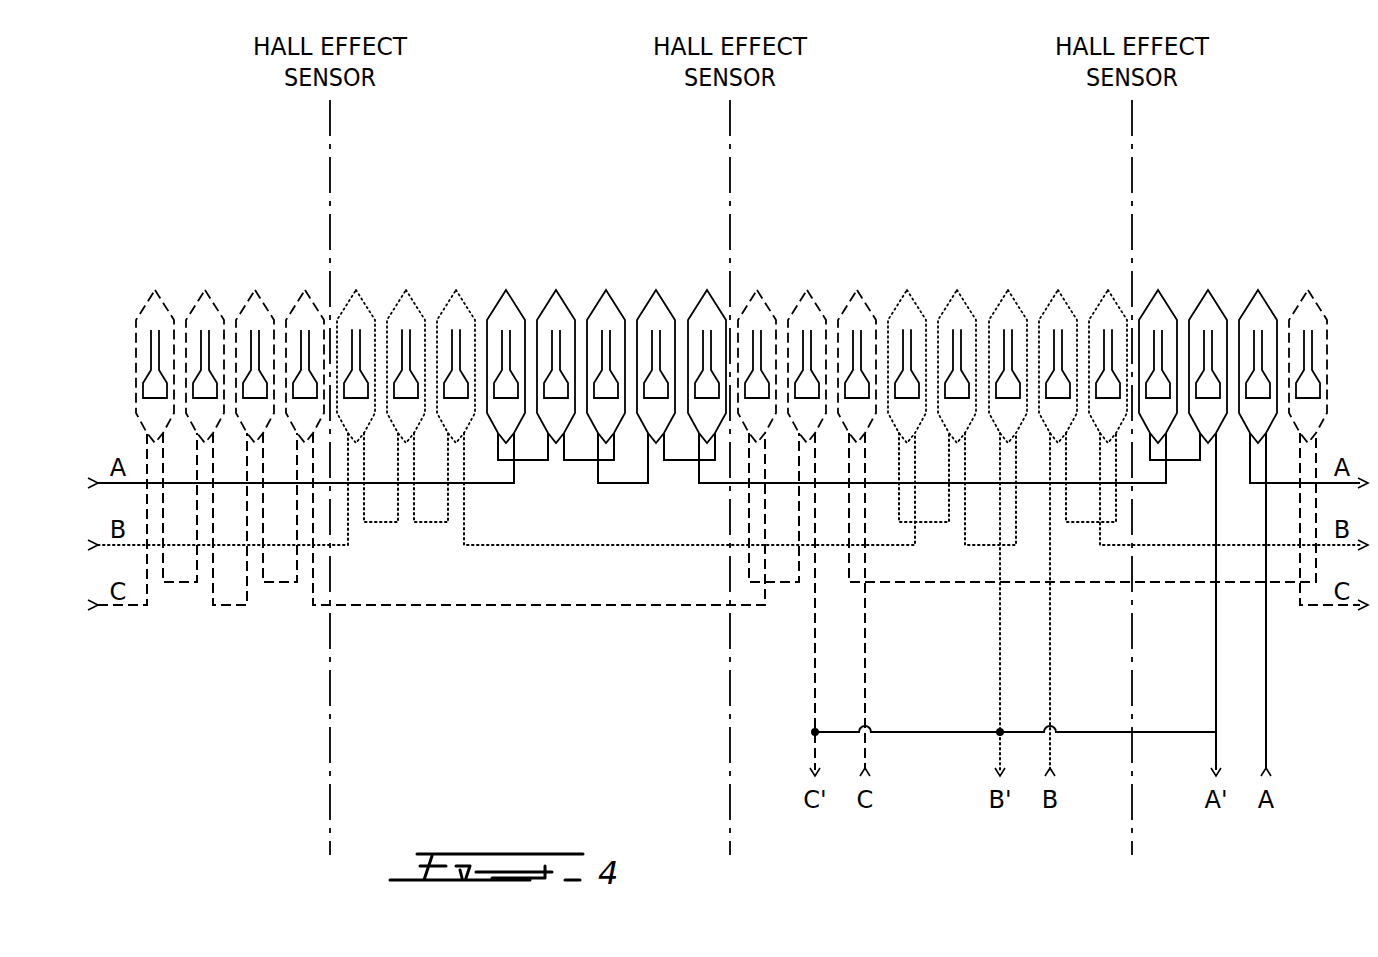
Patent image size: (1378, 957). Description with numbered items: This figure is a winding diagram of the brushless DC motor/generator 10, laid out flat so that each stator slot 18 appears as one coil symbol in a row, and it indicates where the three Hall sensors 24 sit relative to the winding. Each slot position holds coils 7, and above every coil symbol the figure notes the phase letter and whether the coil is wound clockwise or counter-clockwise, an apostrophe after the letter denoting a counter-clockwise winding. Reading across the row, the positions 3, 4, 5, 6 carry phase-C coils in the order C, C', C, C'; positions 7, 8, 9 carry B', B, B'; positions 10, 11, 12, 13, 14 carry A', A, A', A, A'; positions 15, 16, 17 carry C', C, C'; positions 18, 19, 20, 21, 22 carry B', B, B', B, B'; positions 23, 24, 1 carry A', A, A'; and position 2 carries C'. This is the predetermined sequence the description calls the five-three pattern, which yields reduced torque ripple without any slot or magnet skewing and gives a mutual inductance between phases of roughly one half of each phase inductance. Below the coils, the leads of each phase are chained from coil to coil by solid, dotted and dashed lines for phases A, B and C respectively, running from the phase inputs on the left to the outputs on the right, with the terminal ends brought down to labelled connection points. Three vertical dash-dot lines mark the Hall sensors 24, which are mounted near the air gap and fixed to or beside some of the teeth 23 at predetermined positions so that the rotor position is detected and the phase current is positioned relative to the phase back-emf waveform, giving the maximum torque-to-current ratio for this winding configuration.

The stator coil slot 1 is at (1258, 315).
The stator coil slot 2 is at (1308, 315).
The stator coil slot 3 is at (155, 323).
The stator coil slot 4 is at (205, 315).
The stator coil slot 5 is at (255, 323).
The stator coil slot 6 is at (305, 315).
The coils 7 is at (356, 315).
The stator coil slot 8 is at (406, 323).
The stator coil slot 9 is at (456, 315).
The brushless DC motor/generator 10 is at (506, 315).
The stator coil slot 11 is at (556, 323).
The stator coil slot 12 is at (606, 315).
The stator coil slot 13 is at (656, 323).
The stator coil slot 14 is at (707, 315).
The stator coil slot 15 is at (757, 315).
The stator coil slot 16 is at (807, 323).
The stator coil slot 17 is at (857, 315).
The slot 18 is at (907, 315).
The stator coil slot 19 is at (957, 323).
The stator coil slot 20 is at (1008, 315).
The stator coil slot 21 is at (1058, 323).
The stator coil slot 22 is at (1108, 315).
The teeth 23 is at (1158, 315).
The Hall sensors 24 is at (1208, 323).